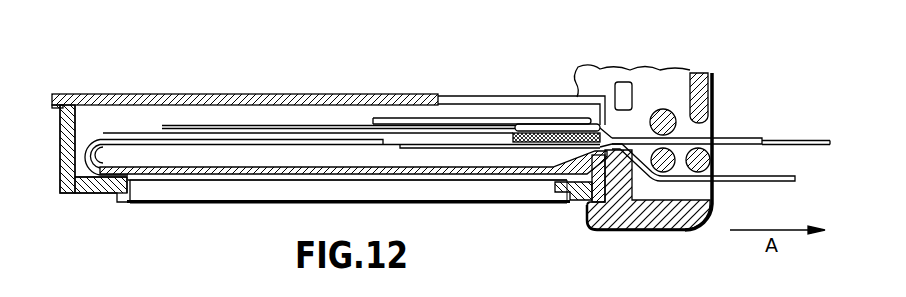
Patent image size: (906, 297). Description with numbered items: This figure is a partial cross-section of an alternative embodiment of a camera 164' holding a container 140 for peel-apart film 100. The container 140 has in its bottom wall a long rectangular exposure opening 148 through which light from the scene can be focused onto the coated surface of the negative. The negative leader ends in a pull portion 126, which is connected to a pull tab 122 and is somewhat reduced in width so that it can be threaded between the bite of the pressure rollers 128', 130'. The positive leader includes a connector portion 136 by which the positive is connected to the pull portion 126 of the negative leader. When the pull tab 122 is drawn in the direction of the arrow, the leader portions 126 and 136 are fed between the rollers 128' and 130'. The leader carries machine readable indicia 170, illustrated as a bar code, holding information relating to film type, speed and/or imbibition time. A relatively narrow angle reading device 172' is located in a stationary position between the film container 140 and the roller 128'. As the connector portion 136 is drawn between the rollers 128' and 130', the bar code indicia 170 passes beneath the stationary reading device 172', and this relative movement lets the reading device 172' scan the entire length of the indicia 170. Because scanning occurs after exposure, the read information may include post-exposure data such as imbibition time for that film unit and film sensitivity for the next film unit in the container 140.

The container 140 is at (315, 96).
The film 100 is at (465, 115).
The reading device 172' is at (644, 73).
The machine readable indicia 170 is at (628, 132).
The pressure roller 128' is at (720, 98).
The connector portion 136 is at (733, 139).
The pull portion 126 is at (779, 141).
The pressure roller 130' is at (700, 160).
The pull tab 122 is at (777, 182).
The camera 164' is at (649, 182).
The exposure opening 148 is at (155, 197).